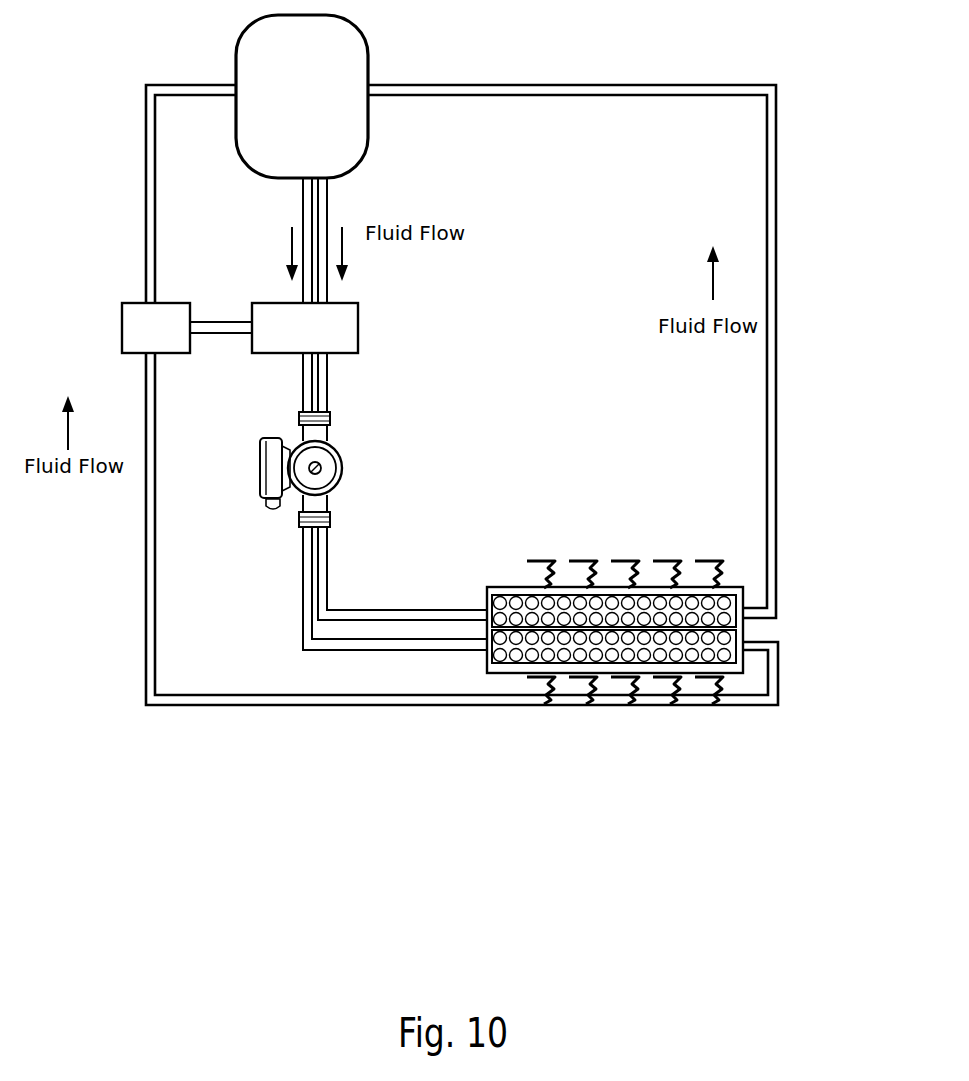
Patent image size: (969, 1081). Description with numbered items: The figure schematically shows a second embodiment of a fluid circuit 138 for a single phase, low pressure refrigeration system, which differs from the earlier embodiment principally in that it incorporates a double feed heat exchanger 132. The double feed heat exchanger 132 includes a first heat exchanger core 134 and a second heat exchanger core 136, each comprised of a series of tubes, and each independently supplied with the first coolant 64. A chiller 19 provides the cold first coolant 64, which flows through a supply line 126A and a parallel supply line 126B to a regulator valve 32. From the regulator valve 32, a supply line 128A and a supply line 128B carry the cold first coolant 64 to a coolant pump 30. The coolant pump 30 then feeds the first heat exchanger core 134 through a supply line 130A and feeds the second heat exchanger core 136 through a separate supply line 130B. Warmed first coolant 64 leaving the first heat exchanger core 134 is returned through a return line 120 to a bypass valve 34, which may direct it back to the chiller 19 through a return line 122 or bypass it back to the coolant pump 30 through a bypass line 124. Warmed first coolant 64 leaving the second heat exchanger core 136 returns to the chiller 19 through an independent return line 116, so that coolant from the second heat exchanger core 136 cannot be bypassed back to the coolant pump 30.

The fluid circuit 138 is at (562, 50).
The chiller 19 is at (365, 60).
The return line 122 is at (146, 170).
The return line 120 is at (146, 652).
The independent return line 116 is at (776, 238).
The first coolant 64 is at (776, 350).
The supply line 126A is at (303, 206).
The supply line 126B is at (327, 199).
The bypass valve 34 is at (162, 303).
The regulator valve 32 is at (358, 312).
The bypass line 124 is at (222, 335).
The supply line 128A is at (303, 385).
The supply line 128B is at (327, 392).
The coolant pump 30 is at (343, 468).
The supply line 130A is at (303, 563).
The supply line 130B is at (345, 608).
The double feed heat exchanger 132 is at (516, 552).
The second heat exchanger core 136 is at (688, 587).
The first heat exchanger core 134 is at (728, 660).